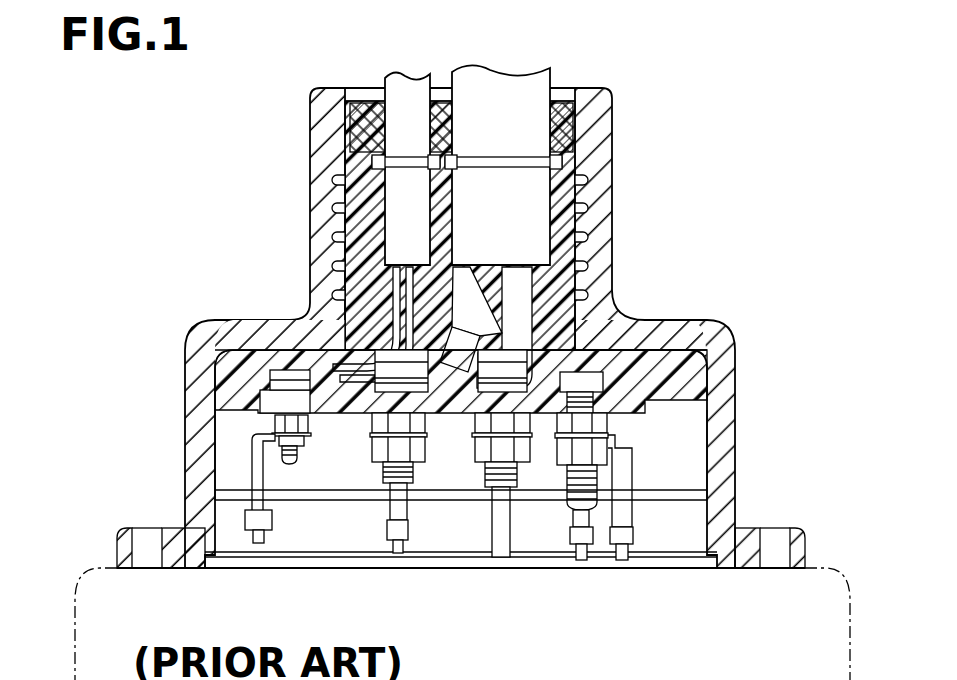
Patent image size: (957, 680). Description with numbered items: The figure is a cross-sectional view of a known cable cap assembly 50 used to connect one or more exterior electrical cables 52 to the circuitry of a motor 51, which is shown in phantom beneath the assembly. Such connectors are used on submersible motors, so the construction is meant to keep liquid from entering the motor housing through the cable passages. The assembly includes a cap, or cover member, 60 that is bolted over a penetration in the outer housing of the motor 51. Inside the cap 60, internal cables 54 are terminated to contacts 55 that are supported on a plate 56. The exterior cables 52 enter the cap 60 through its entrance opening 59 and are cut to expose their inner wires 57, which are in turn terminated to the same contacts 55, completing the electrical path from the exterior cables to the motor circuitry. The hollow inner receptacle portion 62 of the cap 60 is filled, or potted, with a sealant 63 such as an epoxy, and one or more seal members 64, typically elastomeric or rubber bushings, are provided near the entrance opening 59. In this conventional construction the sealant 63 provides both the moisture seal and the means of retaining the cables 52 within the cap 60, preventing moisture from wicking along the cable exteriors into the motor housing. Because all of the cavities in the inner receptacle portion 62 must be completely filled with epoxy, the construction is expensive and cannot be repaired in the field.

The cable cap assembly 50 is at (770, 345).
The motor 51 is at (785, 661).
The electrical cables 52 is at (415, 86).
The internal cables 54 is at (262, 495).
The contacts 55 is at (393, 423).
The plate 56 is at (642, 402).
The inner wires 57 is at (400, 287).
The entrance opening 59 is at (555, 93).
The cap 60 is at (185, 473).
The hollow inner receptacle portion 62 is at (666, 432).
The sealant 63 is at (567, 192).
The seal members 64 is at (362, 104).